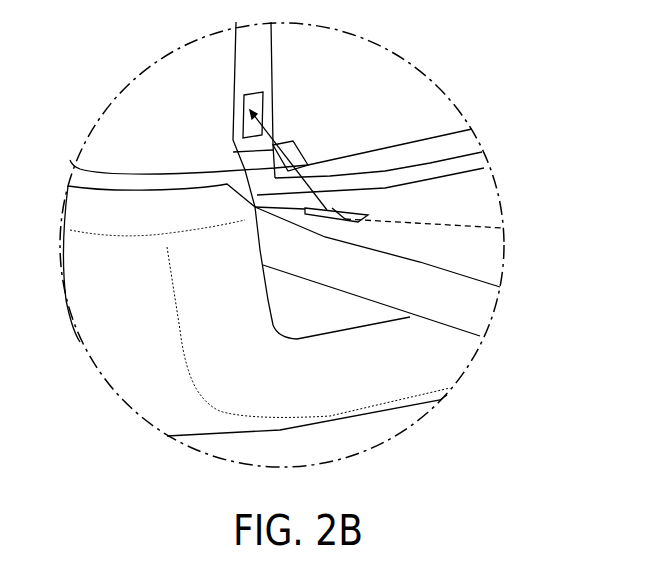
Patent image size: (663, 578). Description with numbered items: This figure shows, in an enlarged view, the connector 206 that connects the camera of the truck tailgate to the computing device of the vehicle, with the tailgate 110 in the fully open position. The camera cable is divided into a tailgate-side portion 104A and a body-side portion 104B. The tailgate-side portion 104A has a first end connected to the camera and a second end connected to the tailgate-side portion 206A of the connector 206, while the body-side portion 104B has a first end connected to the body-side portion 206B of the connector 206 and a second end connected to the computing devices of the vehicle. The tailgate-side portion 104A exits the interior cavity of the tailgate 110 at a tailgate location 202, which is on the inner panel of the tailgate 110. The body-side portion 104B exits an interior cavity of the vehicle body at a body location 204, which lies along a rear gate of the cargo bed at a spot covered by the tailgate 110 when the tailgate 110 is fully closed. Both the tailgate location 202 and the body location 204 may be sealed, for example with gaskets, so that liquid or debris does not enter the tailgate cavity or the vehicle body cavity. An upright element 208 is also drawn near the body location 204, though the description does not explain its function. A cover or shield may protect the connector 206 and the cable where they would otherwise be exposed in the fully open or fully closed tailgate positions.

The tailgate 110 is at (490, 307).
The tailgate-side portion 104A is at (478, 157).
The body-side portion 104B is at (272, 130).
The tailgate location 202 is at (365, 217).
The body location 204 is at (238, 106).
The connector 206 is at (315, 148).
The tailgate-side portion of the connector 206A is at (200, 193).
The body-side portion of the connector 206B is at (233, 153).
The post 208 is at (270, 70).